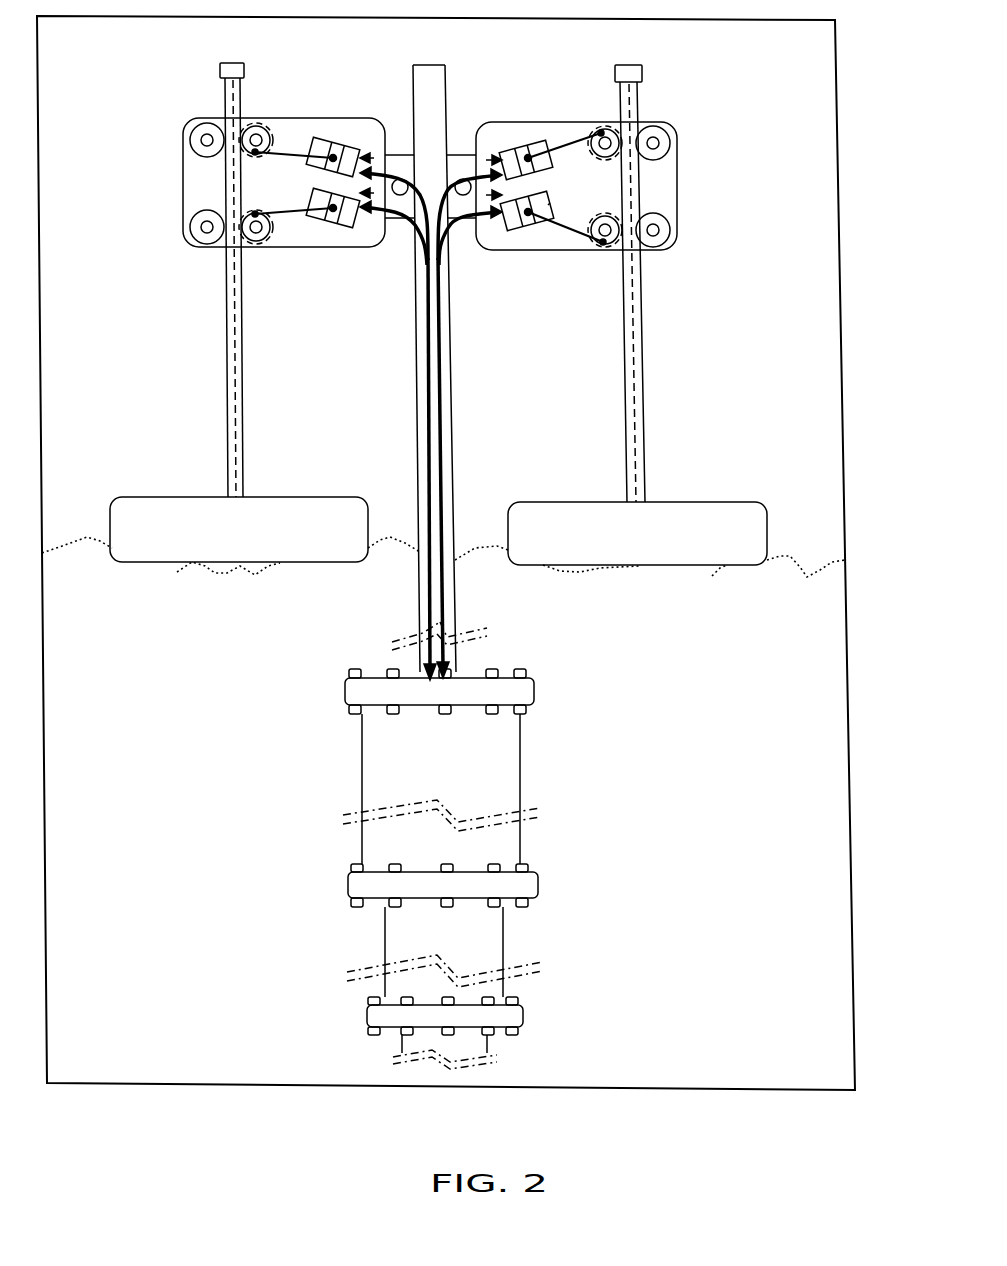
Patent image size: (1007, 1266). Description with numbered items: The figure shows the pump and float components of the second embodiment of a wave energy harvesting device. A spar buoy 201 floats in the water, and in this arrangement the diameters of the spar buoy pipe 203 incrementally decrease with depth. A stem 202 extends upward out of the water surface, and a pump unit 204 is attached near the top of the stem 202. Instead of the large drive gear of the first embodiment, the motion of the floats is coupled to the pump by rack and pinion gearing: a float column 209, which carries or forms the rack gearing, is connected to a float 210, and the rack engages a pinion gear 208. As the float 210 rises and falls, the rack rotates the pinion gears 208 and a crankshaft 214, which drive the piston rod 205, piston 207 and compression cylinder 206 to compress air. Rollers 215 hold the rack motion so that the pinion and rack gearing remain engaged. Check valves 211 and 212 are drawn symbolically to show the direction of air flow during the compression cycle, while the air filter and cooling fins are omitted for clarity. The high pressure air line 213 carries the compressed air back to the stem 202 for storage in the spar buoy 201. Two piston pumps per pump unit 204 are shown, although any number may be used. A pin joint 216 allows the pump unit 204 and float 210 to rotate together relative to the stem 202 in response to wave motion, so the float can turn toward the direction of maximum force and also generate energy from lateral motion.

The spar buoy 201 is at (346, 686).
The stem 202 is at (423, 595).
The spar buoy pipe 203 is at (521, 762).
The pump unit 204 is at (655, 125).
The piston rod 205 is at (568, 203).
The compression cylinder 206 is at (538, 225).
The piston 207 is at (525, 227).
The pinion gear 208 is at (605, 247).
The float column 209 is at (630, 325).
The float 210 is at (637, 533).
The check valve 211 is at (510, 150).
The check valve 212 is at (492, 153).
The high pressure air line 213 is at (430, 272).
The crankshaft 214 is at (647, 252).
The rollers 215 is at (672, 143).
The pin joint 216 is at (463, 178).